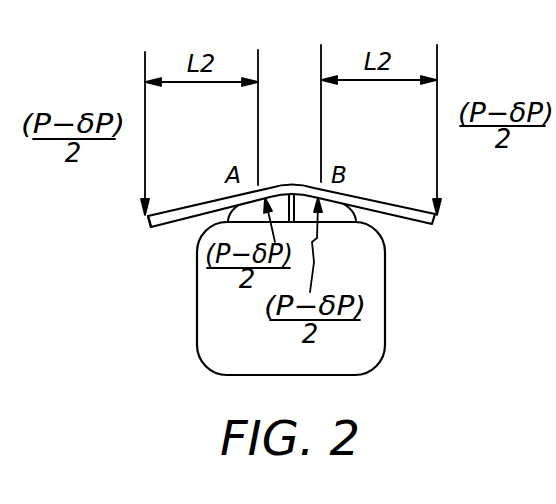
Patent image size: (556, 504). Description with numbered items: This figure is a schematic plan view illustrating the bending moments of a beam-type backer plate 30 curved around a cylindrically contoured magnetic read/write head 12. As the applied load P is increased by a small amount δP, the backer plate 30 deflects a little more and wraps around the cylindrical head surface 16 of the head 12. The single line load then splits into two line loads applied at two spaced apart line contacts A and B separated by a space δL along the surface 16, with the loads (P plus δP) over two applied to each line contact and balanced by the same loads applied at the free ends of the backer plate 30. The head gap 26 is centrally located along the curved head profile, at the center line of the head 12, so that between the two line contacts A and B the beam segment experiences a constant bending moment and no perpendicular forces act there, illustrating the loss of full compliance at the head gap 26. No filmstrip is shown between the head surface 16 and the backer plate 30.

The magnetic read/write head 12 is at (327, 365).
The cylindrical head surface 16 is at (358, 216).
The head gap 26 is at (291, 181).
The backer plate 30 is at (148, 246).